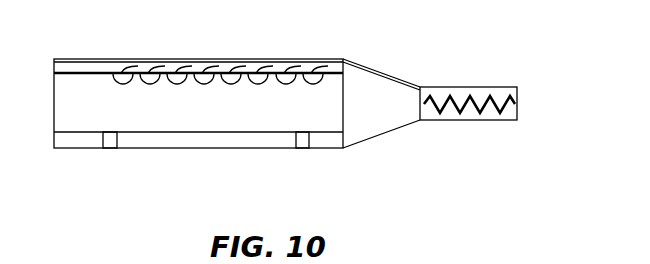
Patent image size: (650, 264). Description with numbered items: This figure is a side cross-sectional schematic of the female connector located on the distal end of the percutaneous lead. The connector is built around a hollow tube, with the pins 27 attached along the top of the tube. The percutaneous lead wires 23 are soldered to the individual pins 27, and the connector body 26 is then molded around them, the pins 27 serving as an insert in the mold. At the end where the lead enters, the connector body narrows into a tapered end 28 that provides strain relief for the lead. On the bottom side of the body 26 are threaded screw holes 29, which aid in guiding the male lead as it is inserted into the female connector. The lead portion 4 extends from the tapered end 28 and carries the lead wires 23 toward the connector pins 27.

The connector body 26 is at (63, 58).
The pins 27 is at (204, 86).
The threaded screw holes 29 is at (112, 150).
The tapered end 28 is at (396, 127).
The connector 4 is at (471, 124).
The percutaneous lead wires 23 is at (516, 106).